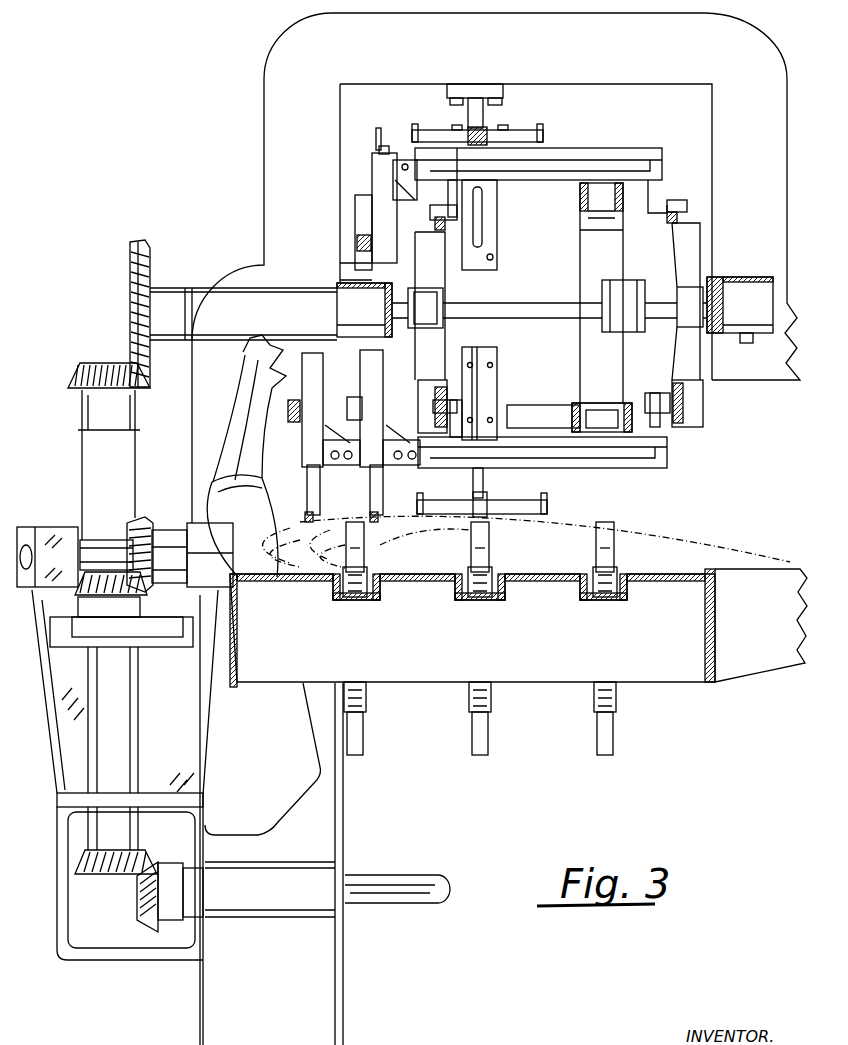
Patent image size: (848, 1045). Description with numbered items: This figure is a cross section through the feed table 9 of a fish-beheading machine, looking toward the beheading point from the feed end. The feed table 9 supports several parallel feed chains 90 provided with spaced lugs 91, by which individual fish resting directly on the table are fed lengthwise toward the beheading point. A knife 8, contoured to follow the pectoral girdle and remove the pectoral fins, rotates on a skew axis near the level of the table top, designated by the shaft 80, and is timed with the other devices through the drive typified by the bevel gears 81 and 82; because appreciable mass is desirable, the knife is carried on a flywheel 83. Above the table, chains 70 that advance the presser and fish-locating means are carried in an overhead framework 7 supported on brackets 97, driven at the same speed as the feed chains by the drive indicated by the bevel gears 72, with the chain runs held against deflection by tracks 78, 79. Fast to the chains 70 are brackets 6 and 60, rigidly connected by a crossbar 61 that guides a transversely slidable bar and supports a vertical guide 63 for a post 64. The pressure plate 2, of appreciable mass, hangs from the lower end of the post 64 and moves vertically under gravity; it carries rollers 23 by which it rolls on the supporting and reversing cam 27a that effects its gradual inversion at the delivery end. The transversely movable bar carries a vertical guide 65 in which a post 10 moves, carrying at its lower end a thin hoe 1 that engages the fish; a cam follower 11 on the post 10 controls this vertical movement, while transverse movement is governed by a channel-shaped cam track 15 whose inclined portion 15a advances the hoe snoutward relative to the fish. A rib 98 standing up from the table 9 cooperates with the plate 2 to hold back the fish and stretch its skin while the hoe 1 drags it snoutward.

The hoe-like fish-engaging member 1 is at (378, 137).
The pressure plate 2 is at (545, 133).
The bracket 6 is at (455, 192).
The overhead framework 7 is at (340, 283).
The knife 8 is at (247, 384).
The feed table 9 is at (680, 575).
The post 10 is at (318, 487).
The cam follower 11 is at (358, 242).
The cam track 15 is at (592, 265).
The inclined portion of cam track 15a is at (527, 413).
The rollers 23 is at (469, 128).
The cam 27a is at (483, 111).
The bracket 60 is at (658, 192).
The crossbar 61 is at (626, 157).
The vertical guide 63 is at (488, 222).
The post 64 is at (484, 478).
The vertical guide 65 is at (380, 190).
The chains 70 is at (436, 213).
The bevel gears 72 is at (130, 358).
The track 78 is at (670, 225).
The track 79 is at (703, 417).
The shaft 80 is at (107, 537).
The bevel gear 81 is at (133, 530).
The bevel gear 82 is at (138, 873).
The flywheel 83 is at (210, 497).
The feed chains 90 is at (487, 564).
The lugs 91 is at (604, 532).
The brackets 97 is at (264, 147).
The rib 98 is at (453, 572).